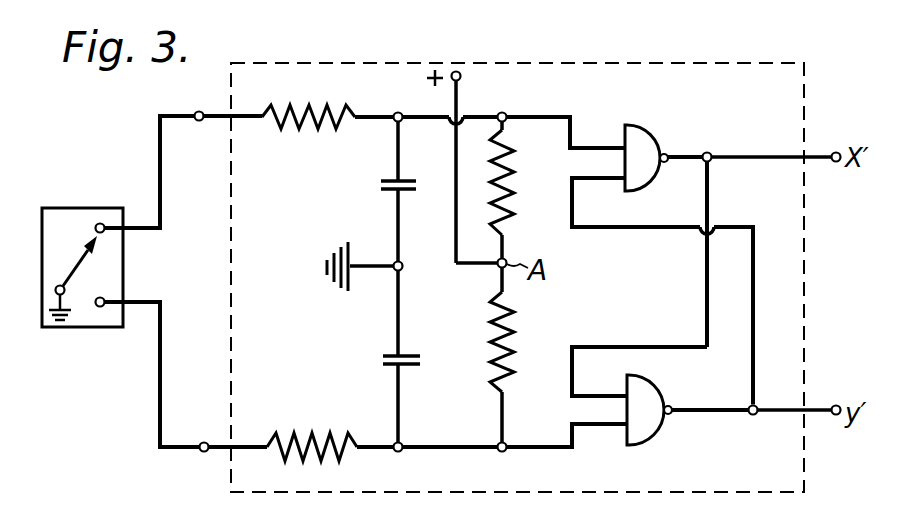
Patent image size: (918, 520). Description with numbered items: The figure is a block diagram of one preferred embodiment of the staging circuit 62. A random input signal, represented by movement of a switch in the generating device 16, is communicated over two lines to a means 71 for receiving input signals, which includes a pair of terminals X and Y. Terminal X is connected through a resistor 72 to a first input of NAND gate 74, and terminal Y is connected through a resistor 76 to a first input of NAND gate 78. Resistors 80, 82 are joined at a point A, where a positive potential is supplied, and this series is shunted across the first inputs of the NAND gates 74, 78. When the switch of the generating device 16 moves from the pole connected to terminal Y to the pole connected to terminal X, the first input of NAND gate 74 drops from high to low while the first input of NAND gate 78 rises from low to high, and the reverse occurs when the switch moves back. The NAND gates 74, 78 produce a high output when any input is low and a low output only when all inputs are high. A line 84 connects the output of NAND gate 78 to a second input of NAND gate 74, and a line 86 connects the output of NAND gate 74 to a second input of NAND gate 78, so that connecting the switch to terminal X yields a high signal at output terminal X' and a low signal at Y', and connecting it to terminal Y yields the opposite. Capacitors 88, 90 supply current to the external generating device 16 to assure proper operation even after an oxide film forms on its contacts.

The generating device 16 is at (66, 222).
The staging circuit 62 is at (790, 486).
The means for receiving input signals 71 is at (198, 121).
The resistor 72 is at (307, 130).
The NAND gate 74 is at (650, 129).
The resistor 76 is at (306, 432).
The NAND gate 78 is at (645, 440).
The resistor 80 is at (506, 180).
The resistor 82 is at (508, 343).
The line 84 is at (660, 230).
The line 86 is at (645, 345).
The capacitor 88 is at (380, 190).
The capacitor 90 is at (381, 358).